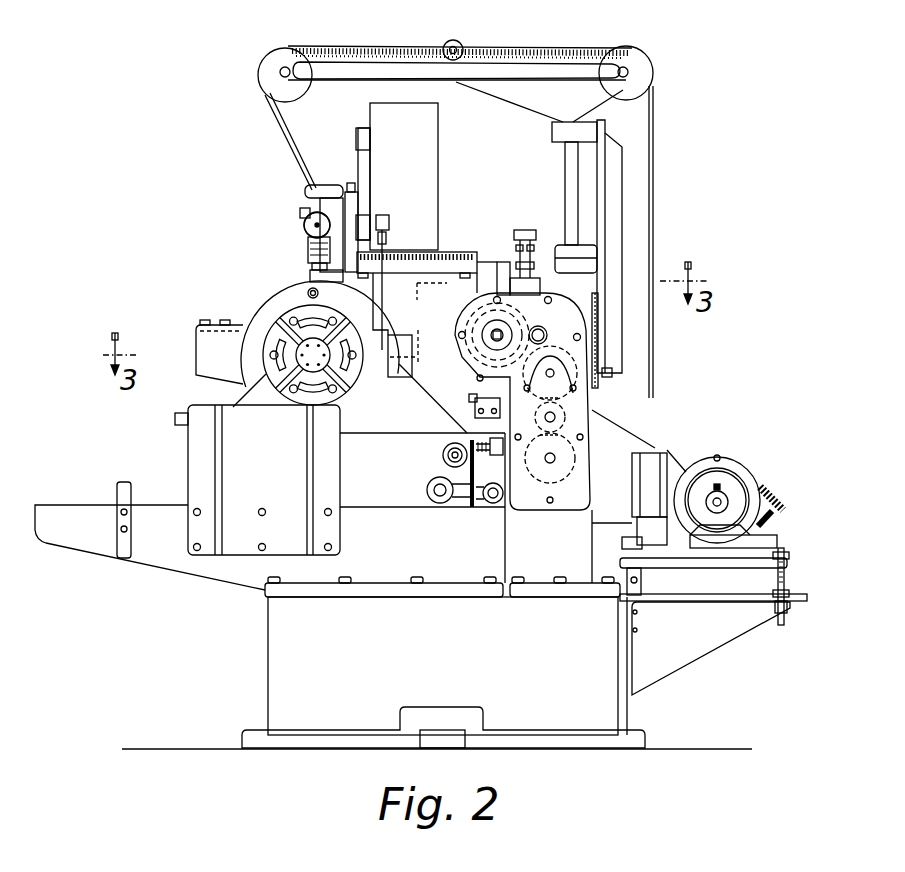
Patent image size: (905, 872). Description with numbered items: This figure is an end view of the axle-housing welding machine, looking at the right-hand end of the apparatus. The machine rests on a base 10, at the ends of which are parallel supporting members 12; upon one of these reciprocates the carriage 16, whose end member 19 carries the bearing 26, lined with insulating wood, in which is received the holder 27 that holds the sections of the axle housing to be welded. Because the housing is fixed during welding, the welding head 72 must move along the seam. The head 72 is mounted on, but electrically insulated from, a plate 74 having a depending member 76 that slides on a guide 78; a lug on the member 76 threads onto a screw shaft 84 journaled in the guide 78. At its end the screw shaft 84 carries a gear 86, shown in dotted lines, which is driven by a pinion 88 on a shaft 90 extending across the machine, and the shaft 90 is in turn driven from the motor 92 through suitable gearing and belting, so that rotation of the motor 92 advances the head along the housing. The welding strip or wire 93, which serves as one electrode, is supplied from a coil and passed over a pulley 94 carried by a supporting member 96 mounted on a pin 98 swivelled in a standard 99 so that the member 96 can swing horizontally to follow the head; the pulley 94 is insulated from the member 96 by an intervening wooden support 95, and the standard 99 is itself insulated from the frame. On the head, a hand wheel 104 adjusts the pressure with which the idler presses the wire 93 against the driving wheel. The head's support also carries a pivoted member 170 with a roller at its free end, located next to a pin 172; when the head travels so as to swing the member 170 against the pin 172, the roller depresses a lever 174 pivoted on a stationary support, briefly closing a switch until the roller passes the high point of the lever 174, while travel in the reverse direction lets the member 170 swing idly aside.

The base 10 is at (279, 677).
The parallel supporting member 12 is at (162, 557).
The carriage 16 is at (234, 397).
The end member 19 is at (253, 395).
The bearing 26 is at (283, 322).
The holder 27 is at (196, 338).
The welding head 72 is at (369, 113).
The plate 74 is at (402, 268).
The depending member 76 is at (480, 291).
The guide 78 is at (490, 387).
The screw shaft 84 is at (499, 334).
The gear 86 is at (462, 351).
The pinion 88 is at (556, 299).
The shaft 90 is at (546, 335).
The motor 92 is at (745, 461).
The welding strip or wire 93 is at (290, 140).
The pulley 94 is at (259, 66).
The wooden support 95 is at (326, 45).
The supporting member 96 is at (495, 57).
The pin 98 is at (571, 178).
The standard 99 is at (612, 195).
The hand wheel 104 is at (303, 228).
The pivoted member 170 is at (538, 233).
The pin 172 is at (531, 256).
The lever 174 is at (533, 293).